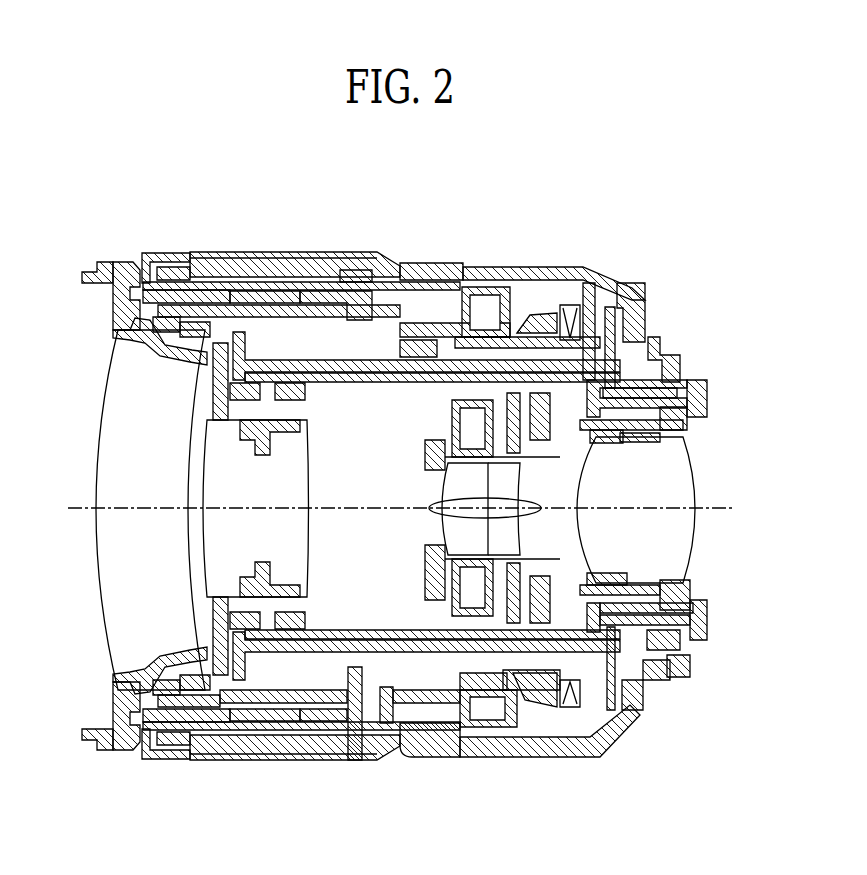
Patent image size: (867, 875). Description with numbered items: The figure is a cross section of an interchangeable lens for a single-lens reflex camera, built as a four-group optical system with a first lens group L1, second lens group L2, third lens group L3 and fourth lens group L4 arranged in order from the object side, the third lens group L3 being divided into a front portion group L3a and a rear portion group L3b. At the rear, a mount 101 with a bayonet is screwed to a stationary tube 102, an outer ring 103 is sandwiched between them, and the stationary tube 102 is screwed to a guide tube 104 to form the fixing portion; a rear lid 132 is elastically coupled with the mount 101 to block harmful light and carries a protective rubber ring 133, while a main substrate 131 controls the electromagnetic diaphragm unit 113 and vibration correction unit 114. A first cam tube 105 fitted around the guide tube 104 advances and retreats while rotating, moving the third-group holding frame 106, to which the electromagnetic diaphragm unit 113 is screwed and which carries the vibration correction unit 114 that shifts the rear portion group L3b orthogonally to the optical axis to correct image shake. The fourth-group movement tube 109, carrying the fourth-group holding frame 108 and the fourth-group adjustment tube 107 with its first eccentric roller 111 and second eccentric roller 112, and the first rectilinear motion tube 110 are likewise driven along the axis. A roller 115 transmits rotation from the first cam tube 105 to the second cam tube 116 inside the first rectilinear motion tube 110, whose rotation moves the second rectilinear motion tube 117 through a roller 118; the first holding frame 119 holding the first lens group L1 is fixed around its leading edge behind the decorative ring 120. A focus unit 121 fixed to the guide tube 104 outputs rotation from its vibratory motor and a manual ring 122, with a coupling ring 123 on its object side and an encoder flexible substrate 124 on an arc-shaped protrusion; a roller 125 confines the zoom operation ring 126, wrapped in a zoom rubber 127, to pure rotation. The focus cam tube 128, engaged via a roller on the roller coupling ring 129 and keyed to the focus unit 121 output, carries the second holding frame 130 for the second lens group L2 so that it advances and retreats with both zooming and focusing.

The mount 101 is at (648, 304).
The stationary tube 102 is at (590, 295).
The outer ring 103 is at (578, 268).
The guide tube 104 is at (658, 340).
The first cam tube 105 is at (318, 296).
The third-group holding frame 106 is at (540, 683).
The fourth-group adjustment tube 107 is at (710, 389).
The fourth-group holding frame 108 is at (695, 423).
The fourth-group movement tube 109 is at (635, 685).
The first rectilinear motion tube 110 is at (395, 312).
The first eccentric roller 111 is at (670, 443).
The second eccentric roller 112 is at (665, 580).
The electromagnetic diaphragm unit 113 is at (428, 580).
The vibration correction unit 114 is at (520, 395).
The roller 115 is at (287, 362).
The second cam tube 116 is at (250, 705).
The second rectilinear motion tube 117 is at (193, 722).
The roller 118 is at (297, 722).
The first holding frame 119 is at (114, 712).
The decorative ring 120 is at (113, 307).
The focus unit 121 is at (512, 727).
The manual ring 122 is at (440, 757).
The coupling ring 123 is at (403, 750).
The encoder flexible substrate 124 is at (356, 277).
The roller 125 is at (347, 713).
The zoom operation ring 126 is at (215, 268).
The zoom rubber 127 is at (280, 254).
The focus cam tube 128 is at (330, 628).
The roller coupling ring 129 is at (300, 405).
The second holding frame 130 is at (220, 643).
The main substrate 131 is at (637, 381).
The rear lid 132 is at (681, 645).
The protective rubber ring 133 is at (672, 665).
The first lens group L1 is at (101, 420).
The second lens group L2 is at (309, 478).
The third lens group L3 is at (440, 511).
The 3a lens group L3a is at (442, 490).
The 3b lens group L3b is at (516, 492).
The fourth lens group L4 is at (696, 488).